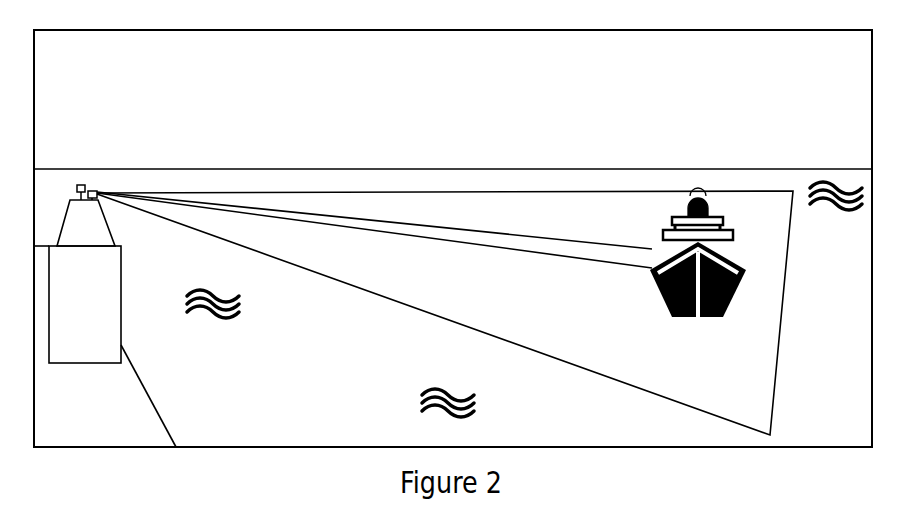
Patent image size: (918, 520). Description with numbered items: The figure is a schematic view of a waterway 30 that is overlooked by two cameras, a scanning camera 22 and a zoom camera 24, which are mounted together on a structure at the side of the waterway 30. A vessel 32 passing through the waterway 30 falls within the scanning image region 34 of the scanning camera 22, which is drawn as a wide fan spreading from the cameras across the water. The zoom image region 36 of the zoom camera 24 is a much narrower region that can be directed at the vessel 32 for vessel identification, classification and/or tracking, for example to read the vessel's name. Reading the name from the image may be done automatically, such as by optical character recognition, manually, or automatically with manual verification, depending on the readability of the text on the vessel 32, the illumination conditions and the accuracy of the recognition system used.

The scanning camera 22 is at (92, 191).
The zoom camera 24 is at (78, 185).
The waterway 30 is at (297, 388).
The vessel 32 is at (738, 292).
The scanning image region 34 is at (533, 322).
The zoom image region 36 is at (572, 246).